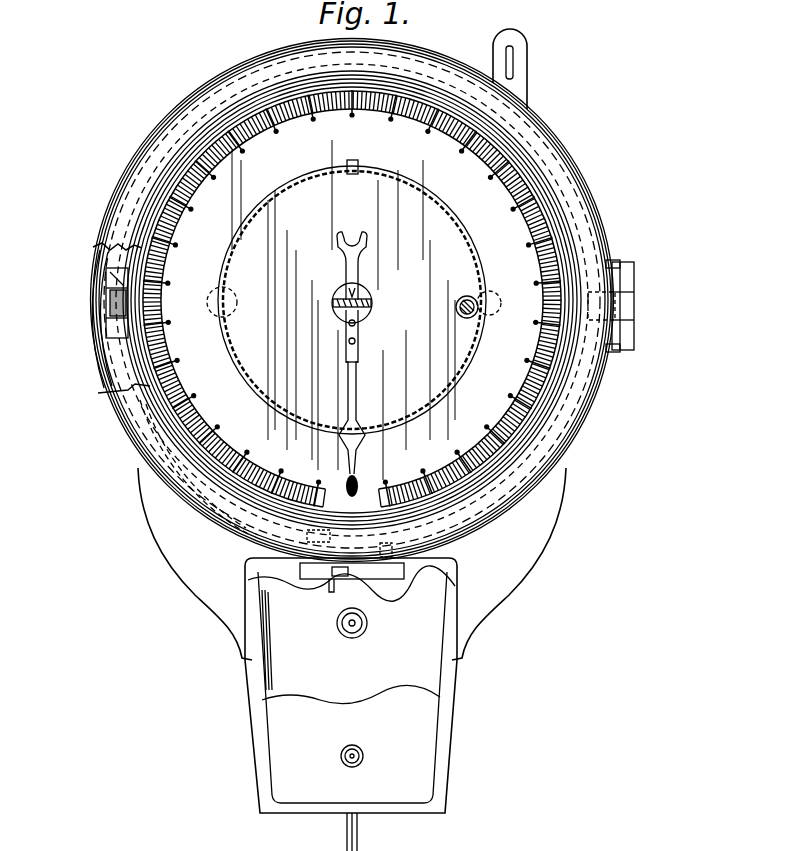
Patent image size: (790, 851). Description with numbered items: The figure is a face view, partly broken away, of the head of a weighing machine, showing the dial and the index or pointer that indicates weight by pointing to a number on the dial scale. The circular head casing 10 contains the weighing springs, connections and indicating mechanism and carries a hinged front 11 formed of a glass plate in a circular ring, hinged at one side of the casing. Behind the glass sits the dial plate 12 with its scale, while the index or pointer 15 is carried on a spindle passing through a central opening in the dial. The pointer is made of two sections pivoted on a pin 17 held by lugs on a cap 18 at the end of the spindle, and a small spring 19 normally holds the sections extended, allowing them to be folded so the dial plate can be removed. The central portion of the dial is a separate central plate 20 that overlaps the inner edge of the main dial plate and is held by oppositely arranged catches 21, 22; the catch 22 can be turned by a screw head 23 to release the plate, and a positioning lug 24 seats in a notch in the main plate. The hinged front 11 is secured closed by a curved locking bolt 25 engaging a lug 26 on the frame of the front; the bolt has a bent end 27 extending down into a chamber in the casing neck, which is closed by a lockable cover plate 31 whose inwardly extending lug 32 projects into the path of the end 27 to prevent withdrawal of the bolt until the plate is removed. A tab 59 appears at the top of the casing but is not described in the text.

The head casing 10 is at (110, 258).
The hinged front 11 is at (562, 410).
The dial plate 12 is at (492, 197).
The index or pointer 15 is at (358, 341).
The pin 17 is at (372, 304).
The cap 18 is at (334, 302).
The spring 19 is at (358, 298).
The central plate 20 is at (372, 264).
The catch 21 is at (234, 301).
The catch 22 is at (468, 298).
The screw head 23 is at (475, 316).
The positioning lug 24 is at (353, 176).
The locking bolt 25 is at (112, 370).
The lug 26 is at (106, 304).
The bent end 27 is at (331, 590).
The cover plate 31 is at (351, 684).
The lug 32 is at (347, 577).
The hanger tab 59 is at (513, 60).